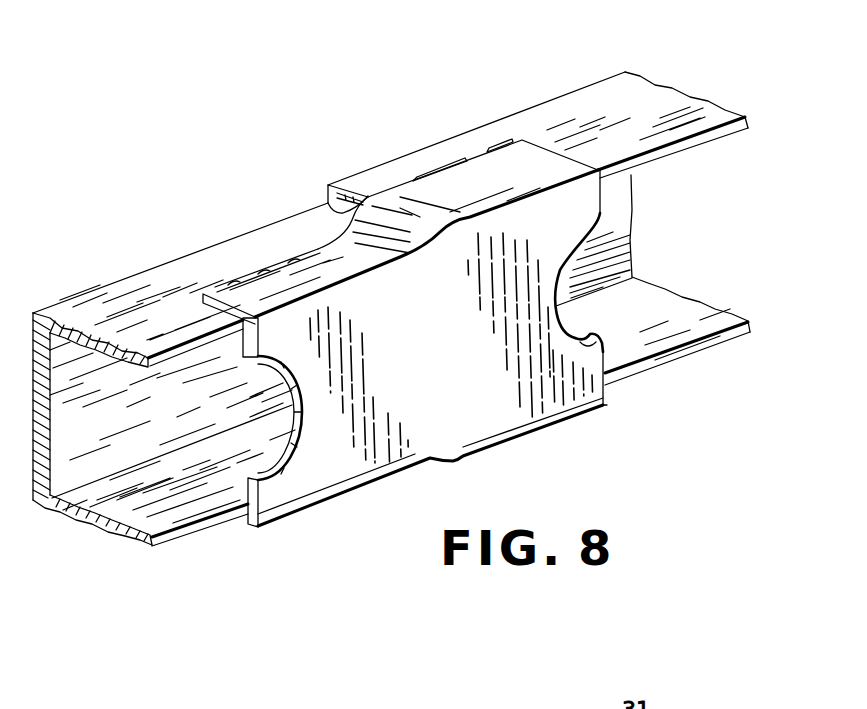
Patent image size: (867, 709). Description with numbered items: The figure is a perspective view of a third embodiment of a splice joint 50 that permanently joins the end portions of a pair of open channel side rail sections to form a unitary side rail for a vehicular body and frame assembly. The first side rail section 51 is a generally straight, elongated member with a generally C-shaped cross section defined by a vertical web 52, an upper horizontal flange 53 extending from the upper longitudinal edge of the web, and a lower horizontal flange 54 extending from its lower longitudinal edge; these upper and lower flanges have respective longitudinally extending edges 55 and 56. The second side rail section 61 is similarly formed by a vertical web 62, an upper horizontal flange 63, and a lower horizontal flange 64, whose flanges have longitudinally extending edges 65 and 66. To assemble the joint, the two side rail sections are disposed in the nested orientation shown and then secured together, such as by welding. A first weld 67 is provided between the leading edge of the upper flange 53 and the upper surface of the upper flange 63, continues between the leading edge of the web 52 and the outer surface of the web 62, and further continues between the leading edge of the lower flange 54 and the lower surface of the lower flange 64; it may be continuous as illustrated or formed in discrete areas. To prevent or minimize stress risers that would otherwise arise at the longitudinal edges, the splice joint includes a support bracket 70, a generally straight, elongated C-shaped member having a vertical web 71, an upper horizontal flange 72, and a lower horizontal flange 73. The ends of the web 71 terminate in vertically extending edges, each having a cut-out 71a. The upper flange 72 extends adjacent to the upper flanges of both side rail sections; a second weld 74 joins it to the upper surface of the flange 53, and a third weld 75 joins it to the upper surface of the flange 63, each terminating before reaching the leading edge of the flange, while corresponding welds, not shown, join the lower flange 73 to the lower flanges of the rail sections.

The splice joint 50 is at (185, 141).
The first side rail section 51 is at (560, 85).
The vertical web 52 is at (617, 242).
The upper horizontal flange 53 is at (638, 130).
The lower horizontal flange 54 is at (610, 324).
The longitudinally extending edge 55 is at (713, 135).
The longitudinally extending edge 56 is at (700, 343).
The second side rail section 61 is at (153, 243).
The vertical web 62 is at (110, 451).
The upper horizontal flange 63 is at (107, 320).
The lower horizontal flange 64 is at (132, 507).
The longitudinally extending edge 65 is at (174, 353).
The longitudinally extending edge 66 is at (170, 534).
The first weld 67 is at (338, 213).
The support bracket 70 is at (425, 480).
The vertical web 71 is at (388, 393).
The cut-out 71a is at (283, 462).
The upper horizontal flange 72 is at (488, 189).
The lower horizontal flange 73 is at (238, 528).
The second weld 74 is at (453, 163).
The third weld 75 is at (260, 270).